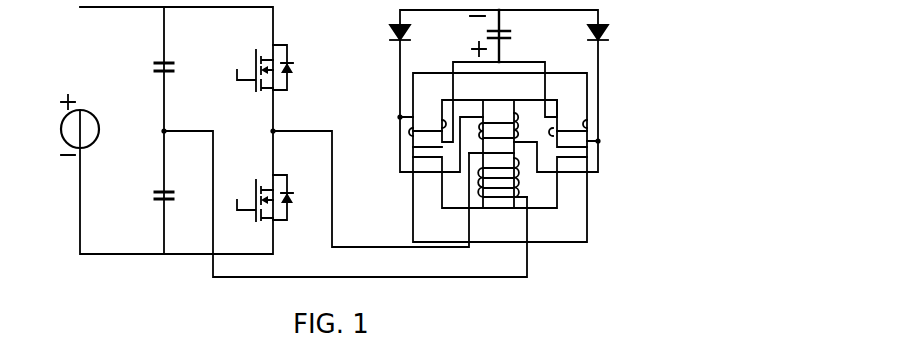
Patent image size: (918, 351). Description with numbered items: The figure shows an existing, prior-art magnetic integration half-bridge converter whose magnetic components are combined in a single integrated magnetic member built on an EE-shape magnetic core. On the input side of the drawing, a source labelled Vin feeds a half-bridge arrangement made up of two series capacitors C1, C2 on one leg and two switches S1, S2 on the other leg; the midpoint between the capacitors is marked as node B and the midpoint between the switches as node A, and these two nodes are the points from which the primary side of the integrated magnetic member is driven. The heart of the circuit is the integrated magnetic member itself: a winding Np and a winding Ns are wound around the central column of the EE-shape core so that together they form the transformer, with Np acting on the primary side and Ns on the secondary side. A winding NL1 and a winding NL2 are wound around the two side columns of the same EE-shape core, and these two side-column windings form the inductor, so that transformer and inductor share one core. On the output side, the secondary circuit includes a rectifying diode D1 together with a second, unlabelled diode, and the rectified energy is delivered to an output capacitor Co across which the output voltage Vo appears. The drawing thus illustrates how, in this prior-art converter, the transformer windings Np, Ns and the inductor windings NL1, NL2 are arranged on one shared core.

The input voltage source Vin is at (60, 125).
The first input capacitor C1 is at (148, 59).
The second input capacitor C2 is at (148, 189).
The first switch (MOSFET) S1 is at (257, 67).
The second switch (MOSFET) S2 is at (257, 197).
The node A is at (297, 114).
The node B is at (191, 114).
The first rectifier diode D1 is at (383, 34).
The output voltage Vo is at (461, 36).
The output capacitor Co is at (516, 36).
The winding NL1 is at (398, 125).
The winding NL2 is at (596, 125).
The winding Ns is at (498, 117).
The winding Np is at (498, 195).